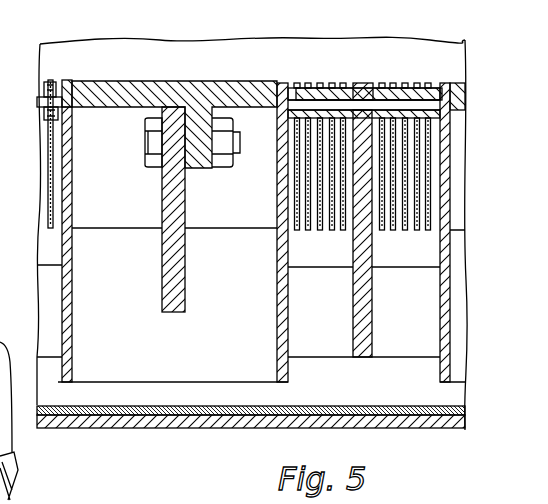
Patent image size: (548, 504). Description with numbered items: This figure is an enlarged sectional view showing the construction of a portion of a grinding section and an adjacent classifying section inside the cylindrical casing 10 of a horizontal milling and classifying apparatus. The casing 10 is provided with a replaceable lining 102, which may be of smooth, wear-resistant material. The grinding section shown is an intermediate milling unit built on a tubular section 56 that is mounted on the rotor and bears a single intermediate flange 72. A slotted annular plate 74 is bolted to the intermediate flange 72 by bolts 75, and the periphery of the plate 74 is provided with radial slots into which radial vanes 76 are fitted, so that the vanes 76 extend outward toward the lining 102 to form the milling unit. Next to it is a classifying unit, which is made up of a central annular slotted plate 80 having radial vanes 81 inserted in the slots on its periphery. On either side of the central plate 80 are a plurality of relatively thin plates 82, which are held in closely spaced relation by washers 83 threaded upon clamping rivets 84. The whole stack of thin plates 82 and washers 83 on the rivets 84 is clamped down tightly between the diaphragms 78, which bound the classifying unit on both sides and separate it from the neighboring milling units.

The cylindrical casing 10 is at (248, 427).
The tubular section 56 is at (180, 88).
The intermediate flange 72 is at (203, 168).
The slotted annular plate 74 is at (165, 215).
The bolts 75 is at (147, 150).
The radial vanes 76 is at (228, 337).
The diaphragms 78 is at (73, 192).
The central annular slotted plate 80 is at (363, 83).
The radial vanes 81 is at (328, 320).
The thin plates 82 is at (49, 165).
The washers 83 is at (58, 82).
The clamping rivets 84 is at (69, 99).
The replaceable lining 102 is at (207, 408).